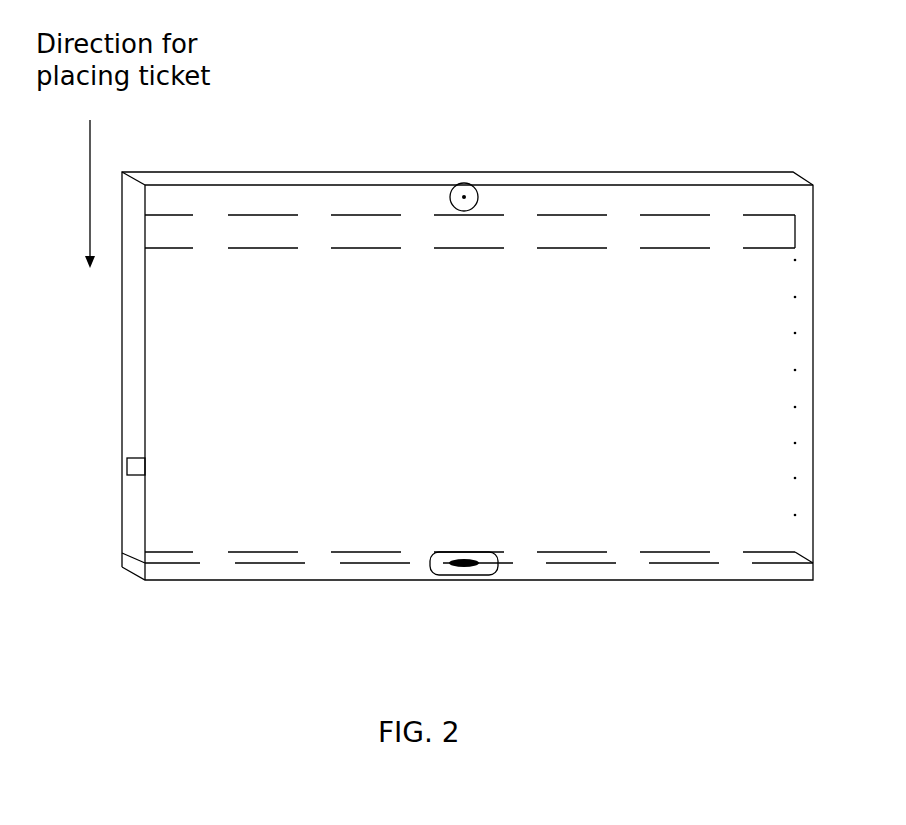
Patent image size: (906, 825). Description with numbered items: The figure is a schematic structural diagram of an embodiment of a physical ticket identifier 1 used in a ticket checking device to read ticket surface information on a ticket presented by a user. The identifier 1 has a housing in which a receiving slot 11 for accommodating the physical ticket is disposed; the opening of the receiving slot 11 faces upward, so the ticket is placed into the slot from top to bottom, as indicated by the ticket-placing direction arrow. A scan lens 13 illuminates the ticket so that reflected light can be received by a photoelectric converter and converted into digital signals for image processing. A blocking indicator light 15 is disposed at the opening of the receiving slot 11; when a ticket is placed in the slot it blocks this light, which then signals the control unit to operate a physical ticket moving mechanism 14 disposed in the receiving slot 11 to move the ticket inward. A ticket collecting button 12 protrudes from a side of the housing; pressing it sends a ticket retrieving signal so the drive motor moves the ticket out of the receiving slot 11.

The identifier 1 is at (323, 120).
The receiving slot 11 is at (594, 181).
The ticket collecting button 12 is at (132, 467).
The scan lens 13 is at (208, 216).
The physical ticket moving mechanism 14 is at (478, 574).
The blocking indicator light 15 is at (453, 187).